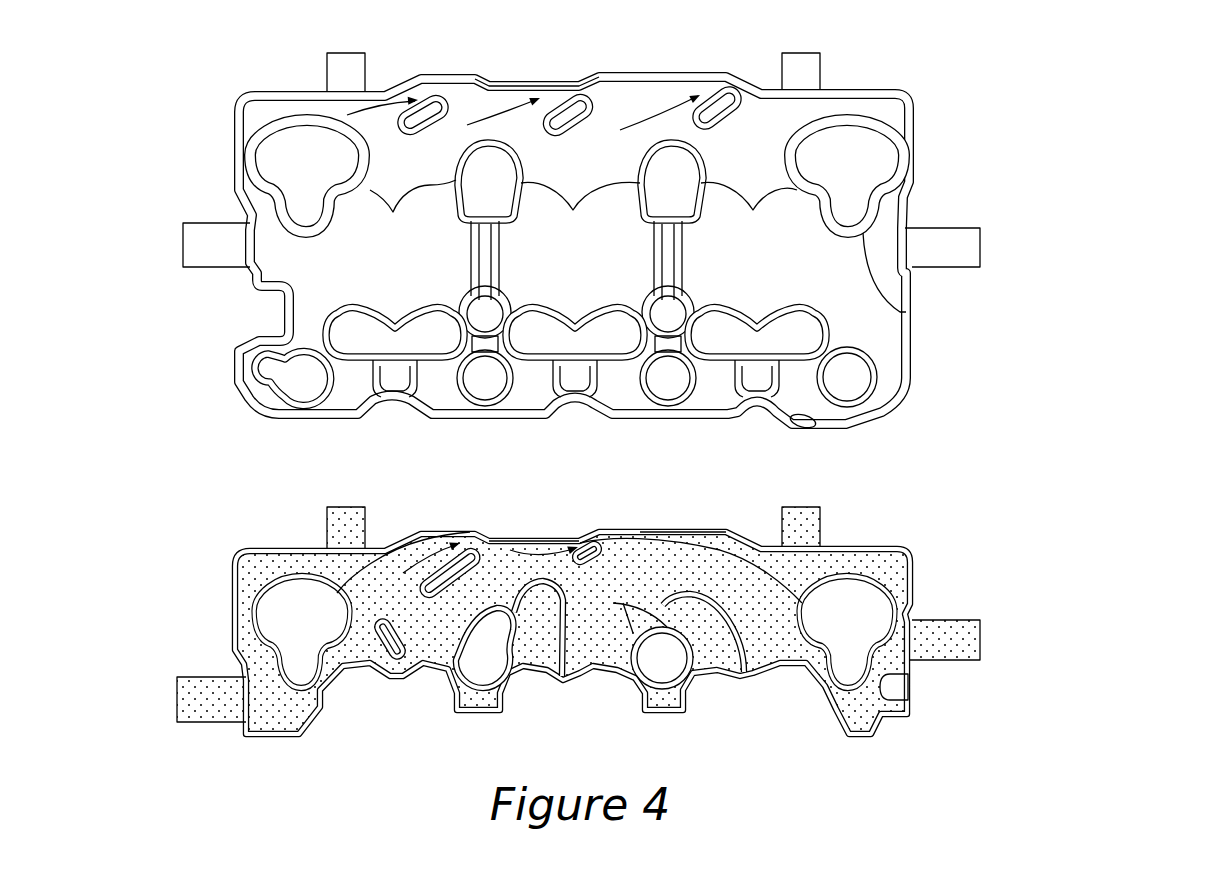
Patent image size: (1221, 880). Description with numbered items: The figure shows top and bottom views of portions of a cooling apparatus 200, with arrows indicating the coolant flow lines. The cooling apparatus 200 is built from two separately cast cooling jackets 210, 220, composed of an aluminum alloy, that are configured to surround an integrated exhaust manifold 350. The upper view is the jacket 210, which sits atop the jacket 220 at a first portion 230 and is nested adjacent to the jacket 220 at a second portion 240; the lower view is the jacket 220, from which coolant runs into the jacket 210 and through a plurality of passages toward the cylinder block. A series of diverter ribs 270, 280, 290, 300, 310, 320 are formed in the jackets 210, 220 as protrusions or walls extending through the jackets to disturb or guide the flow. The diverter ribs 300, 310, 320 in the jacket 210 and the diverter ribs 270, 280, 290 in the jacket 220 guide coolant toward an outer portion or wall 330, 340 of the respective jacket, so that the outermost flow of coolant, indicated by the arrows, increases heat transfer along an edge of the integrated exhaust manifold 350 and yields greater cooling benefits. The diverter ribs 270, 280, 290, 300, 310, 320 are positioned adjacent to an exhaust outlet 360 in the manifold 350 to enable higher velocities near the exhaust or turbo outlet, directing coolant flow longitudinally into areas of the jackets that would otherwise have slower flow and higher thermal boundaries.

The cooling apparatus 200 is at (1115, 50).
The cooling jacket 210 is at (1009, 50).
The cooling jacket 220 is at (1009, 512).
The first portion 230 is at (170, 257).
The second portion 240 is at (170, 93).
The diverter rib 270 is at (403, 650).
The diverter rib 280 is at (471, 565).
The diverter rib 290 is at (600, 568).
The diverter rib 300 is at (437, 112).
The diverter rib 310 is at (467, 125).
The diverter rib 320 is at (722, 116).
The outer wall 330 is at (519, 72).
The outer wall 340 is at (698, 527).
The integrated exhaust manifold 350 is at (569, 582).
The exhaust outlet 360 is at (547, 526).